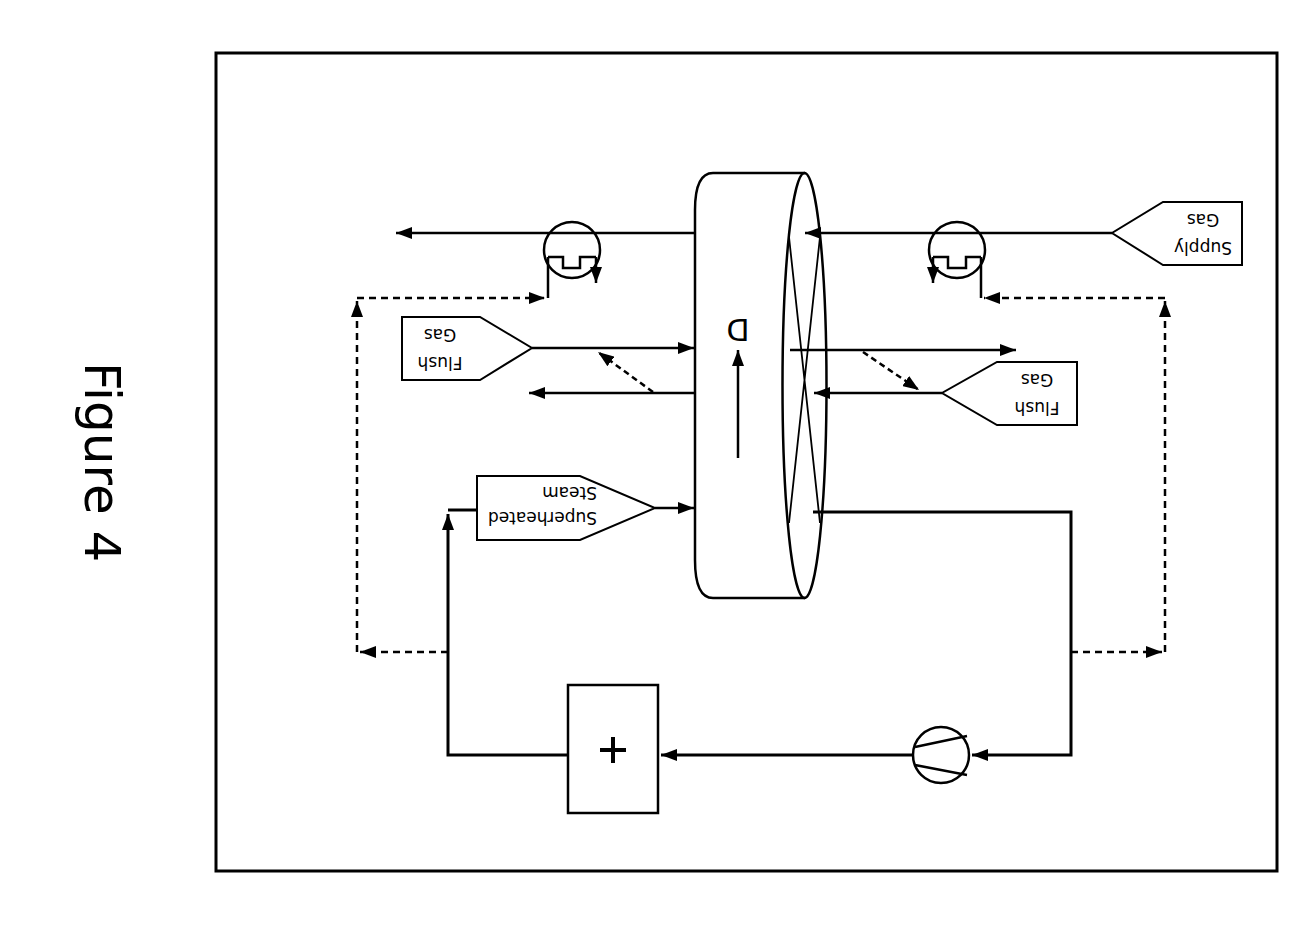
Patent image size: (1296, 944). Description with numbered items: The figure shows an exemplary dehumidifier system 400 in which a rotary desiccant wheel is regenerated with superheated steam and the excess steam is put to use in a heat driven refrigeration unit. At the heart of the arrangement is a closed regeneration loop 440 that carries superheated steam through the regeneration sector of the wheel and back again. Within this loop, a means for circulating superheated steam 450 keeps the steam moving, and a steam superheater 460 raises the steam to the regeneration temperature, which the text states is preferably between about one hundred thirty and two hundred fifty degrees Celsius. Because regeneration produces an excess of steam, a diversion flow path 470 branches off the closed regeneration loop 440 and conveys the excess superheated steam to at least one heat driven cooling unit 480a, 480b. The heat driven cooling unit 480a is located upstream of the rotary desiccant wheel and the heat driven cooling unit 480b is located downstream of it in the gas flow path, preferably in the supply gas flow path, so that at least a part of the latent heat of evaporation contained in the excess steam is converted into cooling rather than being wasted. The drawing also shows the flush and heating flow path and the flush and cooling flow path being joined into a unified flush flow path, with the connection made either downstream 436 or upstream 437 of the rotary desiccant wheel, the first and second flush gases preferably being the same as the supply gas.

The dehumidifier system 400 is at (746, 462).
The downstream connection of flush flow paths 436 is at (614, 384).
The upstream connection of flush flow paths 437 is at (898, 385).
The closed regeneration loop 440 is at (1064, 570).
The means for circulating superheated steam 450 is at (941, 722).
The steam superheater 460 is at (610, 682).
The diversion flow path 470 is at (364, 453).
The heat driven cooling unit 480a is at (957, 210).
The heat driven cooling unit 480b is at (572, 210).